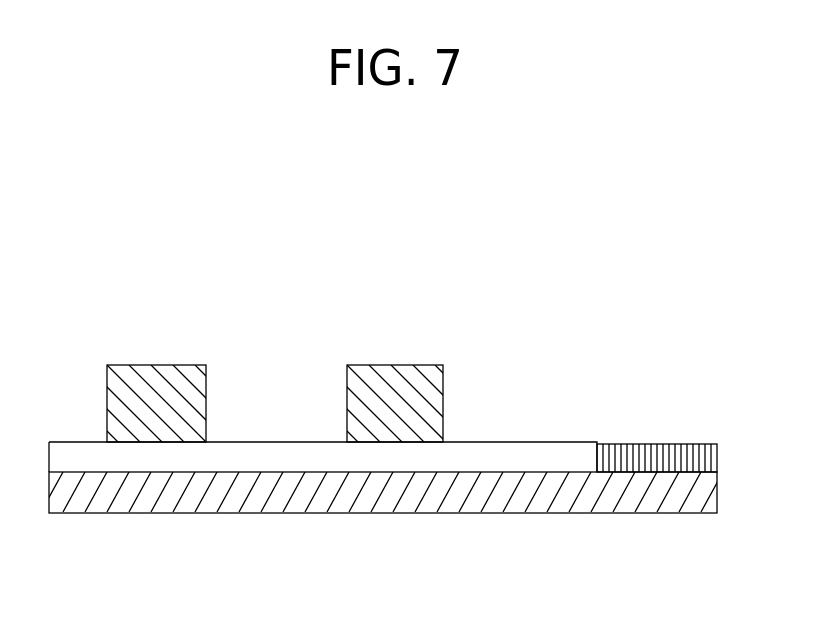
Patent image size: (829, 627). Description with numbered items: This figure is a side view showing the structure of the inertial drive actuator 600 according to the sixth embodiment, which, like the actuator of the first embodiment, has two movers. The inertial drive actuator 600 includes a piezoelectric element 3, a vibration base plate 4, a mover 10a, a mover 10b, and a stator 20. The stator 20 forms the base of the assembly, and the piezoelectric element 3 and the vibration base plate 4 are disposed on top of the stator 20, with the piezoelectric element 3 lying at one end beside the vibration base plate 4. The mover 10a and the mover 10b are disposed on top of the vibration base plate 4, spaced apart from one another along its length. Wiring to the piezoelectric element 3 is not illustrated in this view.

The inertial drive actuator 600 is at (591, 277).
The stator 20 is at (236, 506).
The vibration base plate 4 is at (527, 452).
The piezoelectric element 3 is at (650, 446).
The mover 10a is at (176, 377).
The mover 10b is at (417, 377).